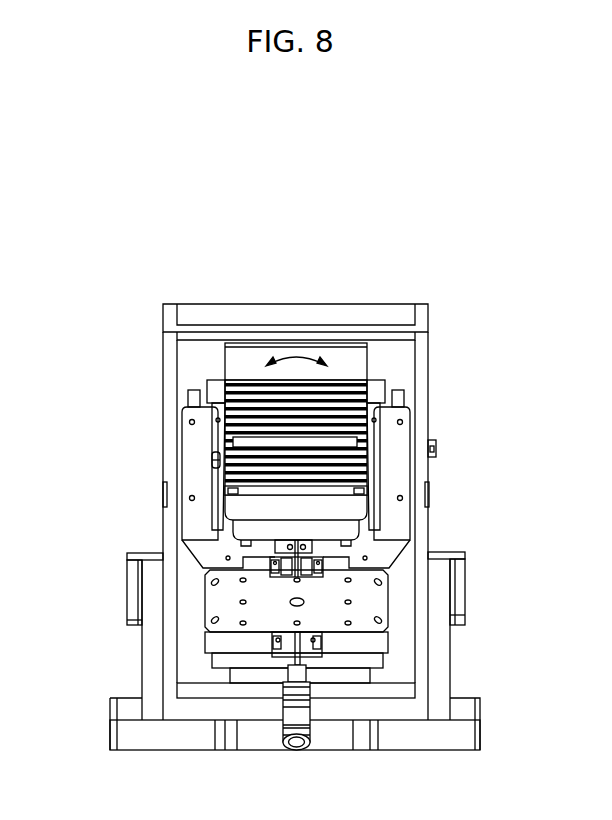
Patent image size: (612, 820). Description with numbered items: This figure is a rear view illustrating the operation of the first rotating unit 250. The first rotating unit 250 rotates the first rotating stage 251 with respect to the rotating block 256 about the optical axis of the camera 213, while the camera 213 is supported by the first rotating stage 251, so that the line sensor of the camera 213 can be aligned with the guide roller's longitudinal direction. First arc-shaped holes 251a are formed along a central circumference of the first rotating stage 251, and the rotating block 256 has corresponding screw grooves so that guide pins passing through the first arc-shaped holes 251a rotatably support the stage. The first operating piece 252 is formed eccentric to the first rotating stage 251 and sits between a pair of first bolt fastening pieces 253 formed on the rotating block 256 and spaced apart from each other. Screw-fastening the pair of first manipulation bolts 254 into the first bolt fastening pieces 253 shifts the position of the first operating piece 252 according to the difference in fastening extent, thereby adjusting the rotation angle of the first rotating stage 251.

The camera 213 is at (347, 441).
The first rotating unit 250 is at (56, 545).
The first rotating stage 251 is at (234, 474).
The first arc-shaped holes 251a is at (212, 460).
The first operating piece 252 is at (205, 568).
The first bolt fastening pieces 253 is at (283, 575).
The first manipulation bolts 254 is at (273, 575).
The rotating block 256 is at (338, 563).